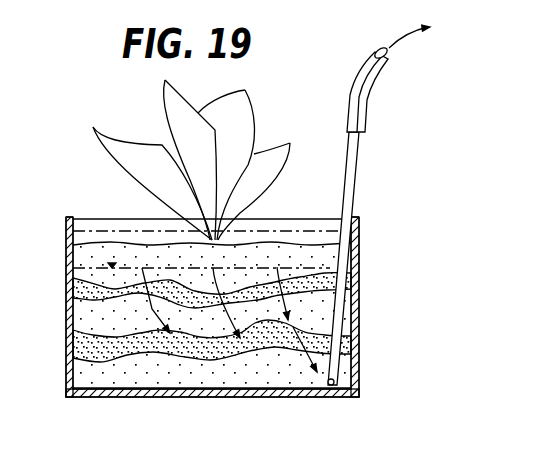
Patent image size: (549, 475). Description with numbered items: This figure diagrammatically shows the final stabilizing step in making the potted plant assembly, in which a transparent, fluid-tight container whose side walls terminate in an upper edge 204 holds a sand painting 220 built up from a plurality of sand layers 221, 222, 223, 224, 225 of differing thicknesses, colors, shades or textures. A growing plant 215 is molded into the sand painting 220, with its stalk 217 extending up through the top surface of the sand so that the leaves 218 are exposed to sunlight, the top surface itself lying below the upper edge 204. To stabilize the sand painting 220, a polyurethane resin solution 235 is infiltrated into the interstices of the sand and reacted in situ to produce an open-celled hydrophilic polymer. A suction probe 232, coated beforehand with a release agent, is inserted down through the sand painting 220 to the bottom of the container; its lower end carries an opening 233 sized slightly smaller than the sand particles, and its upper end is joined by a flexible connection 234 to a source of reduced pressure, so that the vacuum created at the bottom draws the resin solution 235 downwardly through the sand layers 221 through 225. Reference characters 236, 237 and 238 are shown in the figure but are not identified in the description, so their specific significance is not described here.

The upper edge 204 is at (68, 214).
The growing plant 215 is at (180, 150).
The stalk 217 is at (223, 233).
The leaves 218 is at (246, 110).
The sand painting 220 is at (122, 367).
The sand layer 221 is at (347, 365).
The sand layer 222 is at (343, 340).
The sand layer 223 is at (347, 315).
The sand layer 224 is at (350, 290).
The sand layer 225 is at (356, 254).
The suction probe 232 is at (353, 190).
The opening 233 is at (338, 382).
The flexible connection 234 is at (368, 58).
The polyurethane resin solution 235 is at (94, 237).
The water level 236 is at (126, 231).
The lower water level 237 is at (93, 268).
The flow path 238 is at (152, 309).